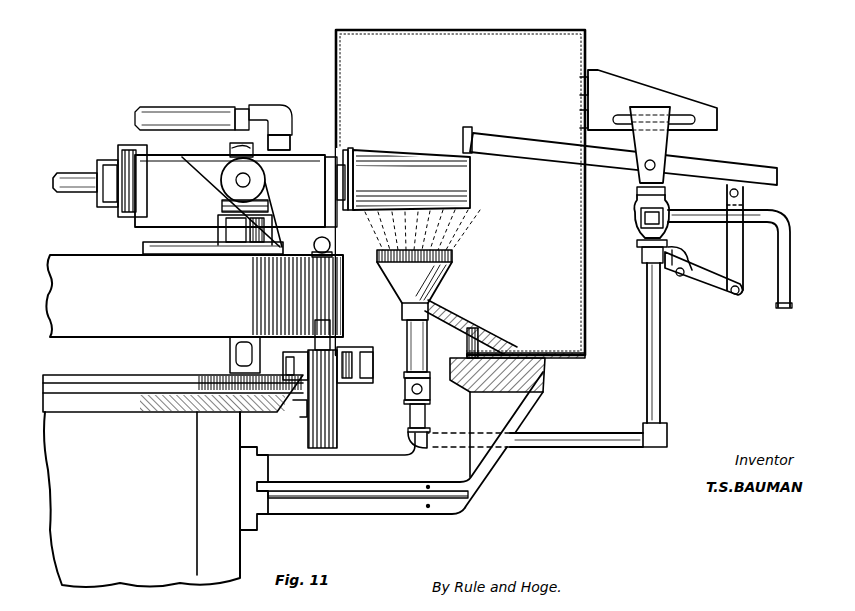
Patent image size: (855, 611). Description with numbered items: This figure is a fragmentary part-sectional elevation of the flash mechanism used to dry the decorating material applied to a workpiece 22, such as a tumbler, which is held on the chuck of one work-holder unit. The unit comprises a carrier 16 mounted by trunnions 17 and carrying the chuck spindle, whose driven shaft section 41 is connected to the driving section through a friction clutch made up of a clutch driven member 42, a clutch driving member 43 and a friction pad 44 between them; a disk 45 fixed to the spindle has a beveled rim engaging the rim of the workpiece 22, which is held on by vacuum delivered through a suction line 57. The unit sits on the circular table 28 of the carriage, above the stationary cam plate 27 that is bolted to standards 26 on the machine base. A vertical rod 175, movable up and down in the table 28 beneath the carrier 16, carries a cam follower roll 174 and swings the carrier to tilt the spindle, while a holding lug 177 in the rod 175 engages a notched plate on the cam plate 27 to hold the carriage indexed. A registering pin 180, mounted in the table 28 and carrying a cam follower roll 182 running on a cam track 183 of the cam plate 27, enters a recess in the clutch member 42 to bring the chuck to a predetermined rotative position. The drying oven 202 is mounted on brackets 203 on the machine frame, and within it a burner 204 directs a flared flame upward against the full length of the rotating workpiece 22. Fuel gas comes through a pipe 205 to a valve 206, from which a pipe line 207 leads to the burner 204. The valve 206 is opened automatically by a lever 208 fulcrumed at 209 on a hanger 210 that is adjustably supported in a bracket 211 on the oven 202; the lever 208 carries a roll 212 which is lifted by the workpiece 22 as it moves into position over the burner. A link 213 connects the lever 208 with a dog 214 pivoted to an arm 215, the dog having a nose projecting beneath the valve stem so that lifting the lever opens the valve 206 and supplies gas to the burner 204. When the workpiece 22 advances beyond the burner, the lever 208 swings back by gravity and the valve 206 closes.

The carrier 16 is at (176, 207).
The trunnions 17 is at (236, 182).
The workpiece 22 is at (430, 127).
The standards 26 is at (228, 540).
The cam plate 27 is at (92, 400).
The table 28 is at (164, 307).
The driven shaft section 41 is at (87, 178).
The clutch driven member 42 is at (270, 150).
The clutch driving member 43 is at (232, 153).
The friction pad 44 is at (233, 150).
The disk 45 is at (346, 148).
The suction line 57 is at (172, 100).
The cam follower roll 174 is at (350, 384).
The vertical rod 175 is at (336, 345).
The holding lug 177 is at (300, 410).
The registering pin 180 is at (258, 220).
The cam follower roll 182 is at (240, 355).
The cam track 183 is at (162, 372).
The drying oven 202 is at (494, 24).
The brackets 203 is at (518, 404).
The burner 204 is at (432, 283).
The fuel gas pipe 205 is at (788, 268).
The valve 206 is at (633, 222).
The pipe line 207 is at (647, 322).
The lever 208 is at (730, 170).
The fulcrum 209 is at (657, 165).
The hanger 210 is at (662, 110).
The bracket 211 is at (632, 92).
The roll 212 is at (470, 126).
The link 213 is at (740, 262).
The dog 214 is at (702, 285).
The arm 215 is at (680, 246).